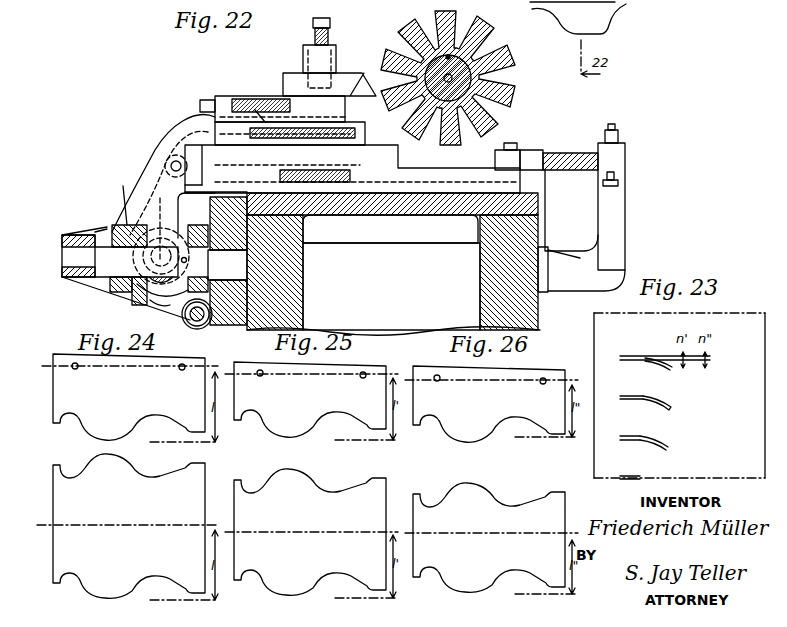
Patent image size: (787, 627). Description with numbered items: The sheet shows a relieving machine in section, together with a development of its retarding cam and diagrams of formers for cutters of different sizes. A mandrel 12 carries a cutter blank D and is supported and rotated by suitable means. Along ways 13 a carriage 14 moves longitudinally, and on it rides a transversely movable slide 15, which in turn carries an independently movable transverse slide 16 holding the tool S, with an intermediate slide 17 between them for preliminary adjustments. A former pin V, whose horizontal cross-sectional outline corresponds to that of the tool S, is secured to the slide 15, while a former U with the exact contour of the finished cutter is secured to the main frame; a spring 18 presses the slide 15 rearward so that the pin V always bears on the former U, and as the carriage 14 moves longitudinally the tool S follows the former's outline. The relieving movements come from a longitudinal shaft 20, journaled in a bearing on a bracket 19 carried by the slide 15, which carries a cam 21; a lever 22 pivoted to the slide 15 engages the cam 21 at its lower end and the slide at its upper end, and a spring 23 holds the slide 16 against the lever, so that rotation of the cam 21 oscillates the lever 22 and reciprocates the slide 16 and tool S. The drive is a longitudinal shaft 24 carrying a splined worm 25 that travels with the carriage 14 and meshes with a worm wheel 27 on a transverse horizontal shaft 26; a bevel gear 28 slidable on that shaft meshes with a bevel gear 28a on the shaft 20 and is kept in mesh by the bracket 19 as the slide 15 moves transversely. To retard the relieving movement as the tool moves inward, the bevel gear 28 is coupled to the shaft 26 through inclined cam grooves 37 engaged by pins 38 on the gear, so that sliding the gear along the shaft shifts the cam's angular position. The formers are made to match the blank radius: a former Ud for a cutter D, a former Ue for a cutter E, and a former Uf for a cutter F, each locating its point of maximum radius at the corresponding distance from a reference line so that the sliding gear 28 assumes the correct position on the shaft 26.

In FIG. 22, the mandrel 12 is at (498, 80).
In FIG. 22, the cutter blank D is at (508, 53).
In FIG. 24, the cutter blank D is at (57, 548).
In FIG. 22, the tool S is at (360, 84).
In FIG. 22, the ways 13 is at (290, 237).
In FIG. 22, the carriage 14 is at (536, 213).
In FIG. 22, the transversely movable slide 15 is at (381, 169).
In FIG. 22, the independently movable transverse slide 16 is at (362, 136).
In FIG. 22, the intermediate slide 17 is at (340, 110).
In FIG. 22, the spring 18 is at (300, 176).
In FIG. 22, the bracket 19 is at (132, 182).
In FIG. 22, the longitudinal shaft 20 is at (161, 244).
In FIG. 22, the cam 21 is at (138, 307).
In FIG. 22, the lever 22 is at (180, 135).
In FIG. 22, the spring 23 is at (272, 125).
In FIG. 22, the longitudinal shaft 24 is at (126, 304).
In FIG. 22, the worm 25 is at (182, 310).
In FIG. 22, the transverse horizontal shaft 26 is at (228, 205).
In FIG. 22, the worm wheel 27 is at (195, 225).
In FIG. 22, the bevel gear 28 is at (128, 206).
In FIG. 22, the bevel gear 28a is at (154, 314).
In FIG. 22, the inclined cam grooves 37 is at (107, 232).
In FIG. 23, the inclined cam grooves 37 is at (680, 398).
In FIG. 22, the pins 38 is at (107, 232).
In FIG. 23, the pins 38 is at (655, 356).
In FIG. 22, the former U is at (575, 153).
In FIG. 22, the former pin V is at (532, 150).
In FIG. 24, the former Ud is at (58, 388).
In FIG. 25, the former Ue is at (272, 424).
In FIG. 26, the former Uf is at (452, 427).
In FIG. 25, the cutter E is at (268, 577).
In FIG. 26, the cutter F is at (452, 572).